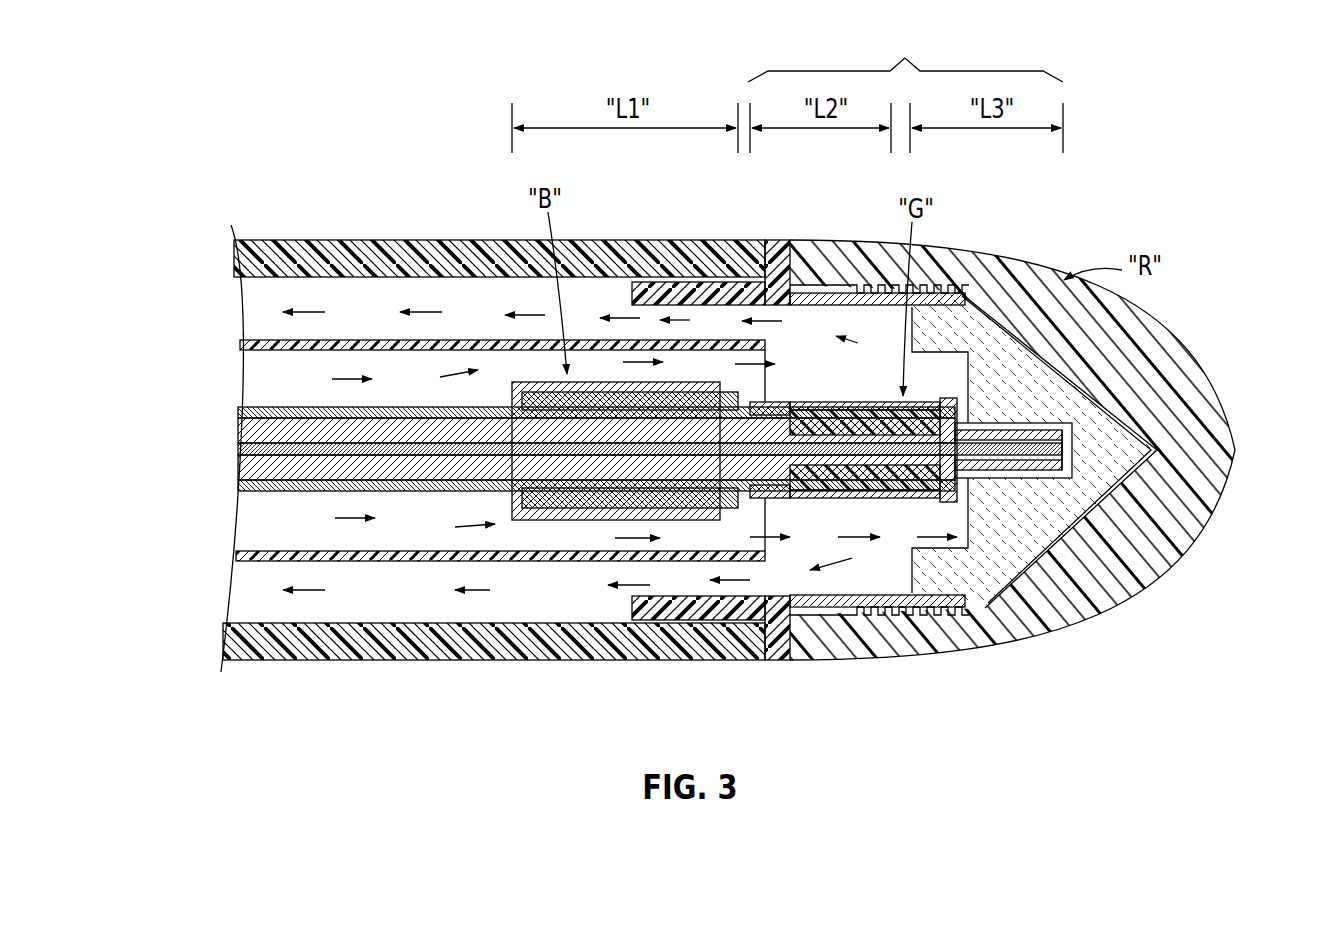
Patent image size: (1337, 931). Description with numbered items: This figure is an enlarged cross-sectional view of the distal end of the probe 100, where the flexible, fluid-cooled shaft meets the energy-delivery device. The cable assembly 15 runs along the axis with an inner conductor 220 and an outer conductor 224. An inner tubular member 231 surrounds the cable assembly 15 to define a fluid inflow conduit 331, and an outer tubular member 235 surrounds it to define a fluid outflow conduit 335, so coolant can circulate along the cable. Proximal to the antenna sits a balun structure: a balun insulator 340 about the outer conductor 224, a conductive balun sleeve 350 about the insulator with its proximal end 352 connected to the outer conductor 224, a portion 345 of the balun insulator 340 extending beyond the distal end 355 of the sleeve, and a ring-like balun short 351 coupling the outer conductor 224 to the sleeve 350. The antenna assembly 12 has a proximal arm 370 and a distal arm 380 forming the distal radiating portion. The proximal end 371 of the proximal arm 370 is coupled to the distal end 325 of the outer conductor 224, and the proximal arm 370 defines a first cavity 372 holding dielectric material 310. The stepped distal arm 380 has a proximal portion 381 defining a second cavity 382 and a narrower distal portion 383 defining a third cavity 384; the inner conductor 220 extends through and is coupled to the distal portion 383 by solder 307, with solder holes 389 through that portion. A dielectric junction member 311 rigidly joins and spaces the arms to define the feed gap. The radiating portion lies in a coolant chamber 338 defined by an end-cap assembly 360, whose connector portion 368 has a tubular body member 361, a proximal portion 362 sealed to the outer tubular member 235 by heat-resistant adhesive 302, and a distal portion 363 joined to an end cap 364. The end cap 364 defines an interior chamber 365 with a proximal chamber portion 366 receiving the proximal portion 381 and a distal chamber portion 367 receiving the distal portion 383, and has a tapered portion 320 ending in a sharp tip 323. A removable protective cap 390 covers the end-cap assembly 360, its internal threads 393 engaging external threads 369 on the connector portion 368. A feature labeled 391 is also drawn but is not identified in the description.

The antenna assembly 12 is at (905, 54).
The cable assembly 15 is at (185, 408).
The probe 100 is at (1228, 172).
The inner conductor 220 is at (240, 418).
The outer conductor 224 is at (236, 470).
The inner tubular member 231 is at (245, 345).
The outer tubular member 235 is at (245, 258).
The heat-resistant adhesive material 302 is at (776, 640).
The solder 307 is at (1072, 470).
The dielectric material 310 is at (1000, 610).
The junction member 311 is at (842, 603).
The tapered portion 320 is at (1035, 625).
The sharp tip 323 is at (1072, 440).
The distal end of the outer conductor 325 is at (766, 500).
The fluid inflow conduit 331 is at (250, 378).
The fluid outflow conduit 335 is at (250, 315).
The coolant chamber 338 is at (838, 588).
The balun insulator 340 is at (557, 508).
The portion of the balun insulator 345 is at (729, 378).
The conductive balun sleeve 350 is at (527, 520).
The balun short 351 is at (508, 392).
The proximal end of the conductive balun sleeve 352 is at (517, 374).
The distal end of the conductive balun sleeve 355 is at (707, 372).
The end-cap assembly 360 is at (1012, 262).
The body member 361 is at (660, 286).
The proximal portion of the connector portion 362 is at (741, 600).
The distal portion of the connector portion 363 is at (893, 618).
The end cap 364 is at (1062, 612).
The interior chamber 365 is at (938, 408).
The proximal chamber portion 366 is at (985, 617).
The distal chamber portion 367 is at (1045, 650).
The connector portion 368 is at (698, 614).
The external threads 369 is at (902, 504).
The proximal arm 370 is at (866, 398).
The proximal end of the proximal arm 371 is at (795, 398).
The first cavity 372 is at (822, 406).
The distal arm 380 is at (966, 418).
The proximal portion of the distal arm 381 is at (976, 289).
The second cavity 382 is at (1016, 366).
The distal portion of the distal arm 383 is at (1115, 385).
The third cavity 384 is at (1020, 526).
The solder holes 389 is at (1120, 518).
The protective cap 390 is at (1195, 370).
The radiation direction 391 is at (1243, 382).
The internal threads 393 is at (918, 620).